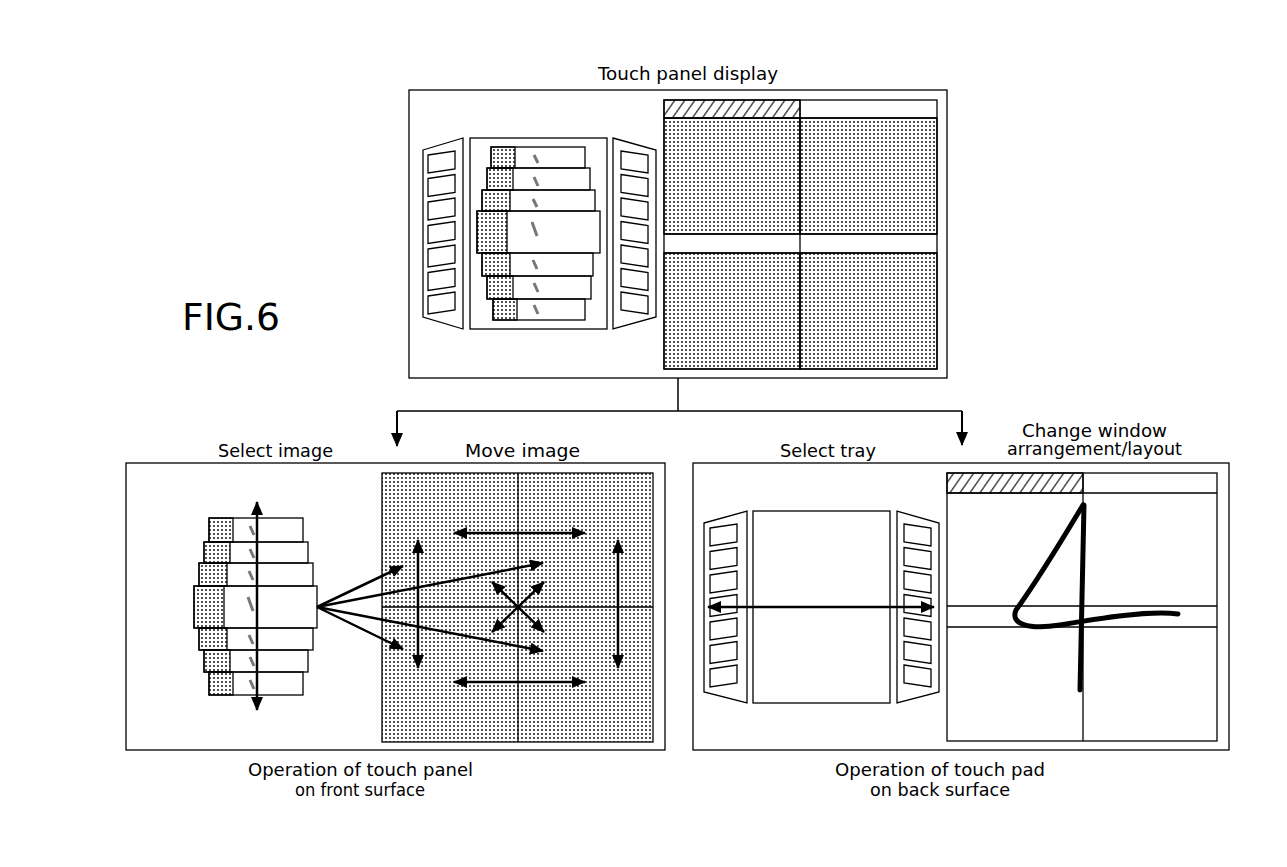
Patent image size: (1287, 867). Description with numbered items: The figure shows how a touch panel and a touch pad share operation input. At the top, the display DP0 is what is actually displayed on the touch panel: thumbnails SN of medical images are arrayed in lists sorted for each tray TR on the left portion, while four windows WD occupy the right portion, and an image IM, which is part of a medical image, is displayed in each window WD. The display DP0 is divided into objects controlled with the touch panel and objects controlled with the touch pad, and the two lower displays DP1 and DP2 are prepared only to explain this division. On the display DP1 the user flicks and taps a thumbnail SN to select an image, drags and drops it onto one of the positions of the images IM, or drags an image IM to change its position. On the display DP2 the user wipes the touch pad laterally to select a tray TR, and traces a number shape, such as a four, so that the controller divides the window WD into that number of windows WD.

The tray TR is at (445, 140).
The thumbnail SN is at (480, 226).
The window WD is at (780, 100).
The image IM is at (935, 155).
The display DP0 is at (882, 90).
The display DP1 is at (165, 462).
The display DP2 is at (1215, 463).